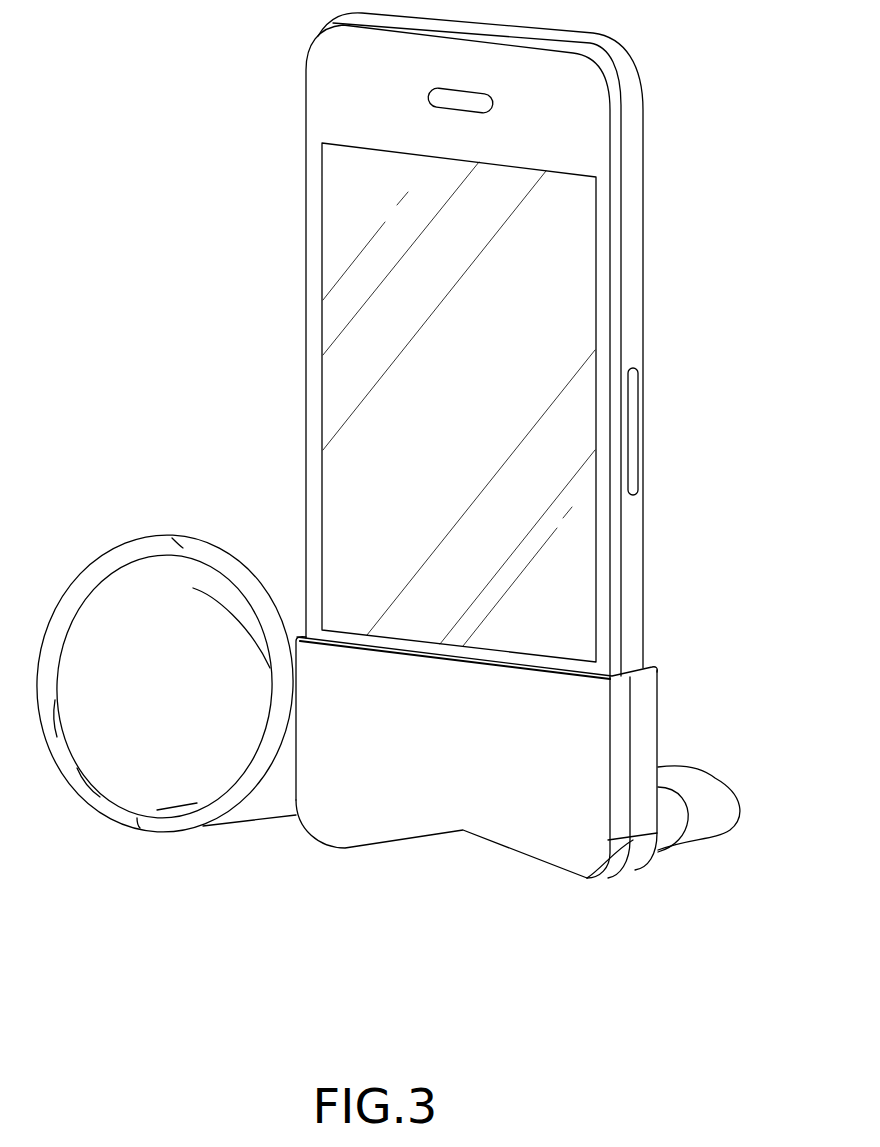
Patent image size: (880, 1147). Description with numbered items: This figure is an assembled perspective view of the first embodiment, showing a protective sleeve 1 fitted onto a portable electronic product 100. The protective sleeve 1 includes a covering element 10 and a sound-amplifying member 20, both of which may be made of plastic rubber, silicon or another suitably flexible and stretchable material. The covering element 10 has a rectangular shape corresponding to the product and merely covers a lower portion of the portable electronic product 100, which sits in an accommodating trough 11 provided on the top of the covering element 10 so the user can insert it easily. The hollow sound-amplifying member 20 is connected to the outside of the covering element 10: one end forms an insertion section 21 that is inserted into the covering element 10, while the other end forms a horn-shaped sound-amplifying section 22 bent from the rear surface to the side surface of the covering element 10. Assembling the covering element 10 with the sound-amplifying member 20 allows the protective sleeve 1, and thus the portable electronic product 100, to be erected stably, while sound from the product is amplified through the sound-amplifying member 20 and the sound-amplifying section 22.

The protective sleeve 1 is at (394, 680).
The covering element 10 is at (507, 740).
The accommodating trough 11 is at (563, 672).
The sound-amplifying member 20 is at (164, 634).
The insertion section 21 is at (702, 822).
The sound-amplifying section 22 is at (125, 600).
The portable electronic product 100 is at (633, 272).